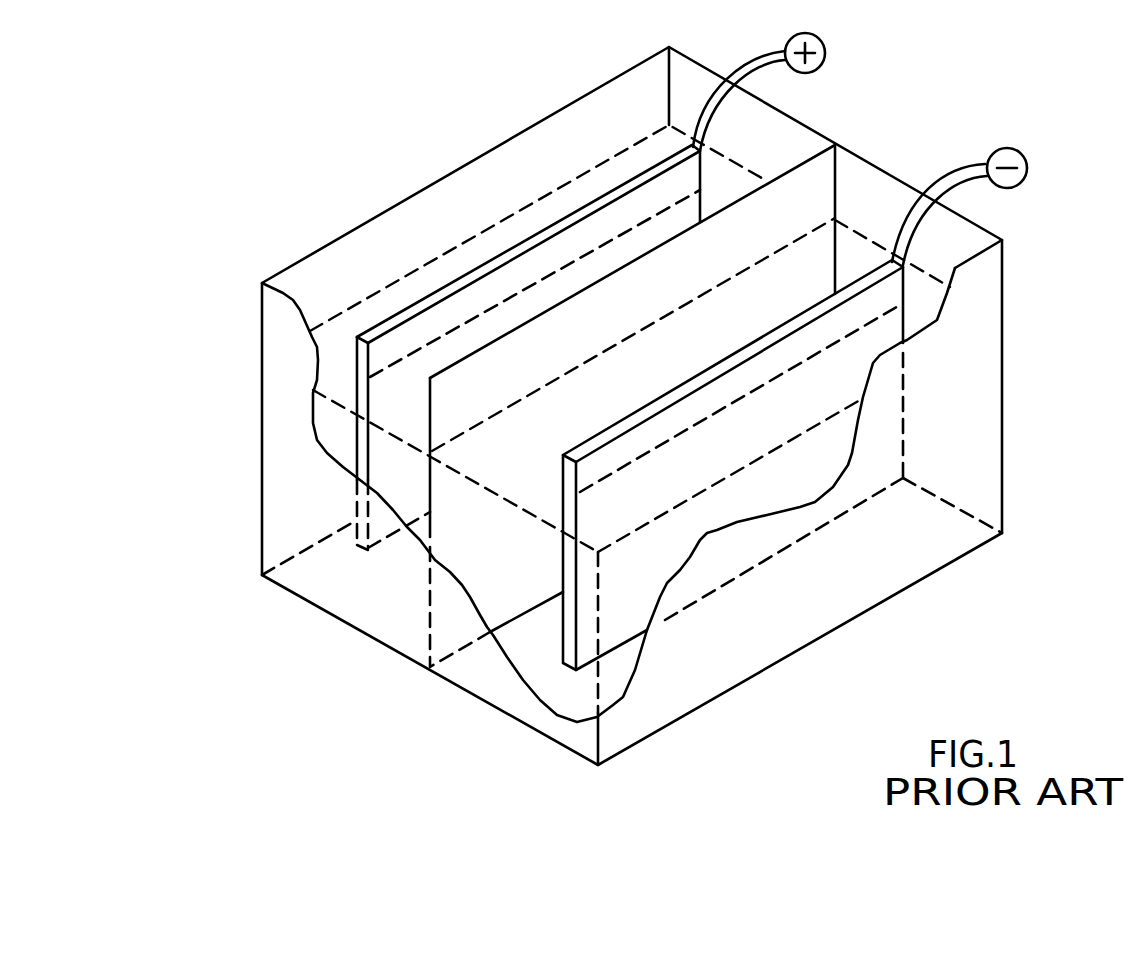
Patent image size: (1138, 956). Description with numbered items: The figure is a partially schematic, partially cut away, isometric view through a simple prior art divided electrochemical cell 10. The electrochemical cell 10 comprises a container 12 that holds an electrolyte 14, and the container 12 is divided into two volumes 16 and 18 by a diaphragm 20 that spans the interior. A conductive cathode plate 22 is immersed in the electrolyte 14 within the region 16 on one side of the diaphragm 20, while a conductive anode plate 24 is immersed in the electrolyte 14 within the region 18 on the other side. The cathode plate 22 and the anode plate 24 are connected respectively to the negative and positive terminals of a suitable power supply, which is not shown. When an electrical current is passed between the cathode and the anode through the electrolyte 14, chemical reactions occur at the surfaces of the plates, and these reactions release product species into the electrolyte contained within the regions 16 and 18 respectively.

The divided electrochemical cell 10 is at (605, 397).
The container 12 is at (262, 447).
The electrolyte 14 is at (652, 152).
The volume 16 is at (367, 320).
The volume 18 is at (930, 300).
The diaphragm 20 is at (818, 150).
The conductive cathode plate 22 is at (537, 200).
The conductive anode plate 24 is at (772, 557).